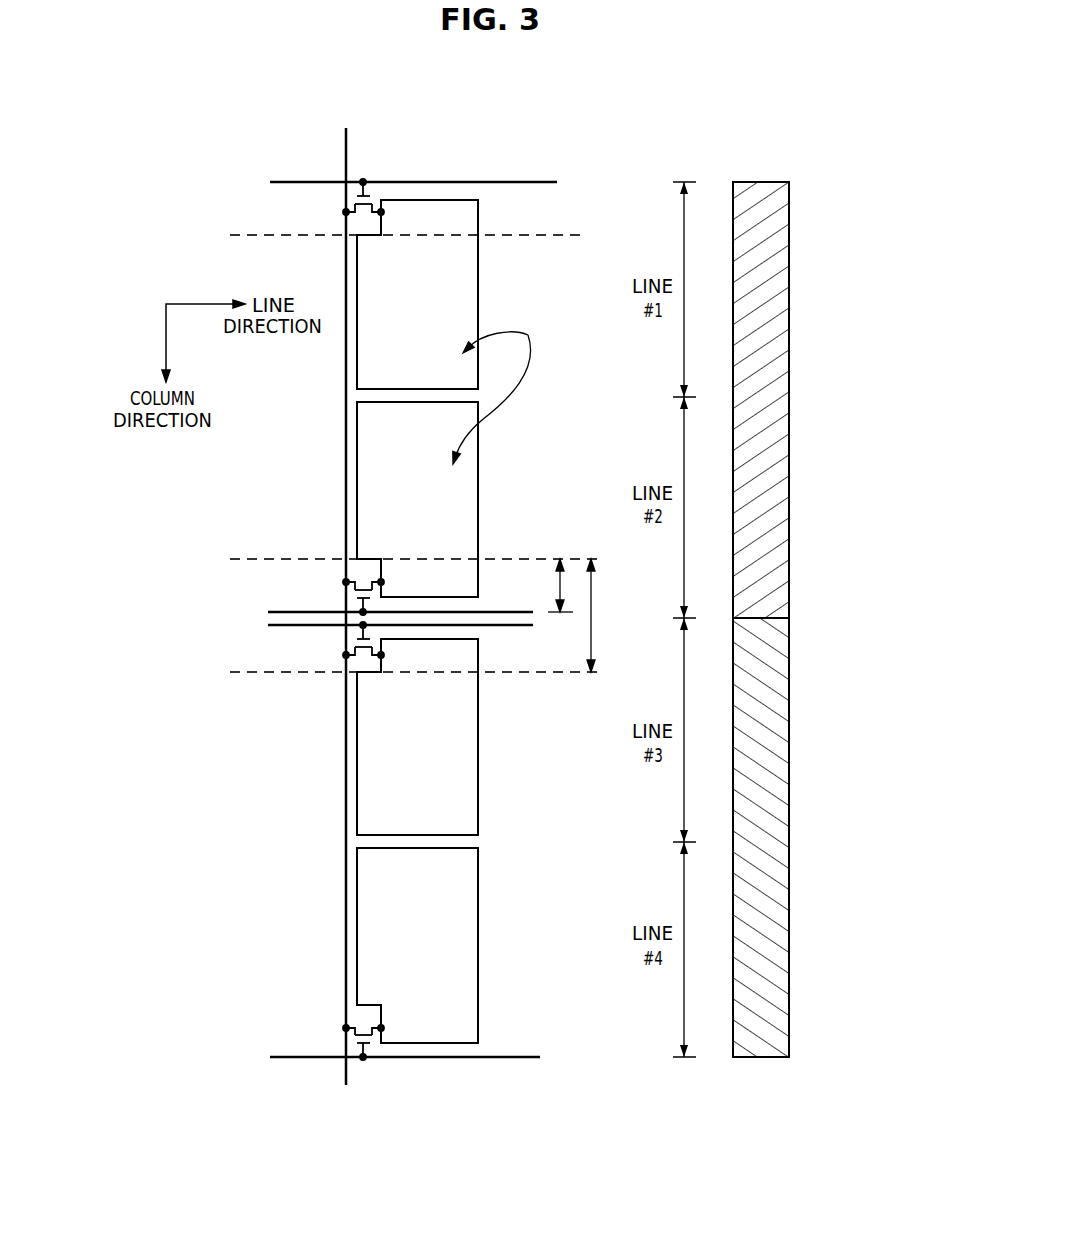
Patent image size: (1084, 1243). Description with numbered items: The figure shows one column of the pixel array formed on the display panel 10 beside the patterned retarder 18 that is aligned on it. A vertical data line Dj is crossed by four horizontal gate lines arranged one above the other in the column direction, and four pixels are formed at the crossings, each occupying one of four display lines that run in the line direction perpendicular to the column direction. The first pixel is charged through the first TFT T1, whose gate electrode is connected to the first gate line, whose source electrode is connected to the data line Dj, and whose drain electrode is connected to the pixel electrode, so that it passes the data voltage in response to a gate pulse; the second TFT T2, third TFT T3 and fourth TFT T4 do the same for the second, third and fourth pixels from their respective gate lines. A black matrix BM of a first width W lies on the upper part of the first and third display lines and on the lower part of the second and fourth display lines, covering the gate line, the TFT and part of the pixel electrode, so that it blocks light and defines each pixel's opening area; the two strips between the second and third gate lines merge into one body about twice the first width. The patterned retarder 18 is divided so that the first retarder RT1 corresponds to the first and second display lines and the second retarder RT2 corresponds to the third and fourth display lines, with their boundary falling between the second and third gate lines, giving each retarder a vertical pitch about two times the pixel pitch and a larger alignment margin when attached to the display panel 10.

The display panel 10 is at (421, 642).
The patterned retarder 18 is at (782, 692).
The data line Dj is at (347, 592).
The first TFT T1 is at (378, 183).
The second TFT T2 is at (348, 570).
The third TFT T3 is at (348, 666).
The fourth TFT T4 is at (378, 1068).
The first retarder RT1 is at (783, 404).
The second retarder RT2 is at (783, 824).
The black matrix BM is at (506, 574).